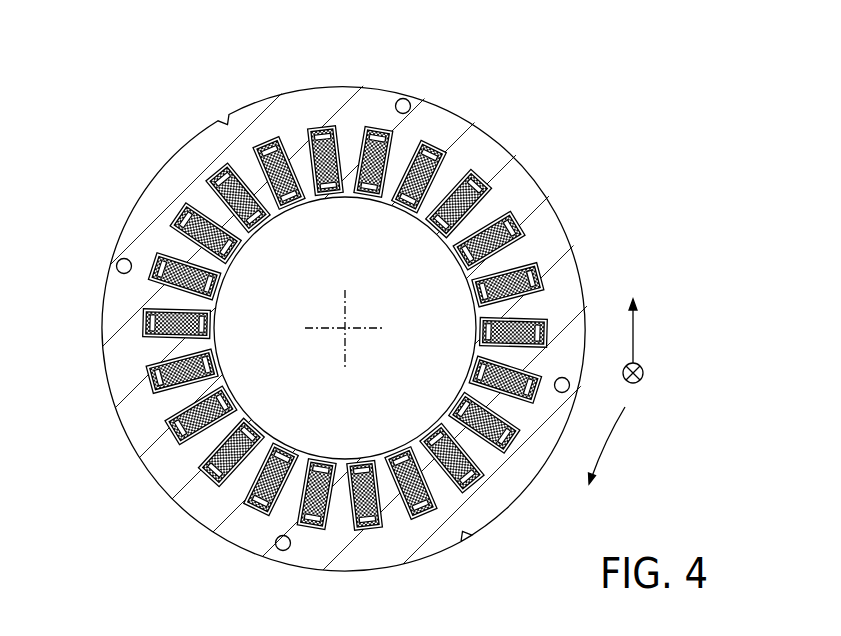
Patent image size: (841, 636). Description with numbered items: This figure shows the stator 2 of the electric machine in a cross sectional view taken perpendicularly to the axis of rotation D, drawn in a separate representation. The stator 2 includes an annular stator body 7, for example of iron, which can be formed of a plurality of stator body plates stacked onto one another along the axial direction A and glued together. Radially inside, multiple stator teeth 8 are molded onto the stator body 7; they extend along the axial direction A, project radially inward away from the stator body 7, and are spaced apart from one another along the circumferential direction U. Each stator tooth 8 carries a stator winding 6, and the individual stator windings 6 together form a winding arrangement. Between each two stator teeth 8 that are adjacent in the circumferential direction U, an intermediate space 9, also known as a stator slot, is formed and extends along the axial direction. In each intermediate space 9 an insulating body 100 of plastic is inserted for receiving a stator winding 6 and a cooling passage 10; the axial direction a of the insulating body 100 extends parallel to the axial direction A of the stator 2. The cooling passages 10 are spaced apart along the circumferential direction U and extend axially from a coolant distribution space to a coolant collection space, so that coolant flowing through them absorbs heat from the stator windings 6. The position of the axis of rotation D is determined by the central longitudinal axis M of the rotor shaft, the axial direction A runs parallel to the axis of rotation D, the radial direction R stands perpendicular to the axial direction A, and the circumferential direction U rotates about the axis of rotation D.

The stator 2 is at (618, 183).
The stator winding 6 is at (305, 152).
The stator body 7 is at (483, 133).
The stator tooth 8 is at (232, 240).
The intermediate space 9 is at (299, 284).
The insulating body 100 is at (303, 158).
The cooling passage 10 is at (270, 138).
The central longitudinal axis M is at (367, 347).
The axis of rotation D is at (349, 334).
The radial direction R is at (637, 337).
The axial direction A is at (675, 382).
The axial direction of the insulating body a is at (645, 373).
The circumferential direction U is at (617, 440).